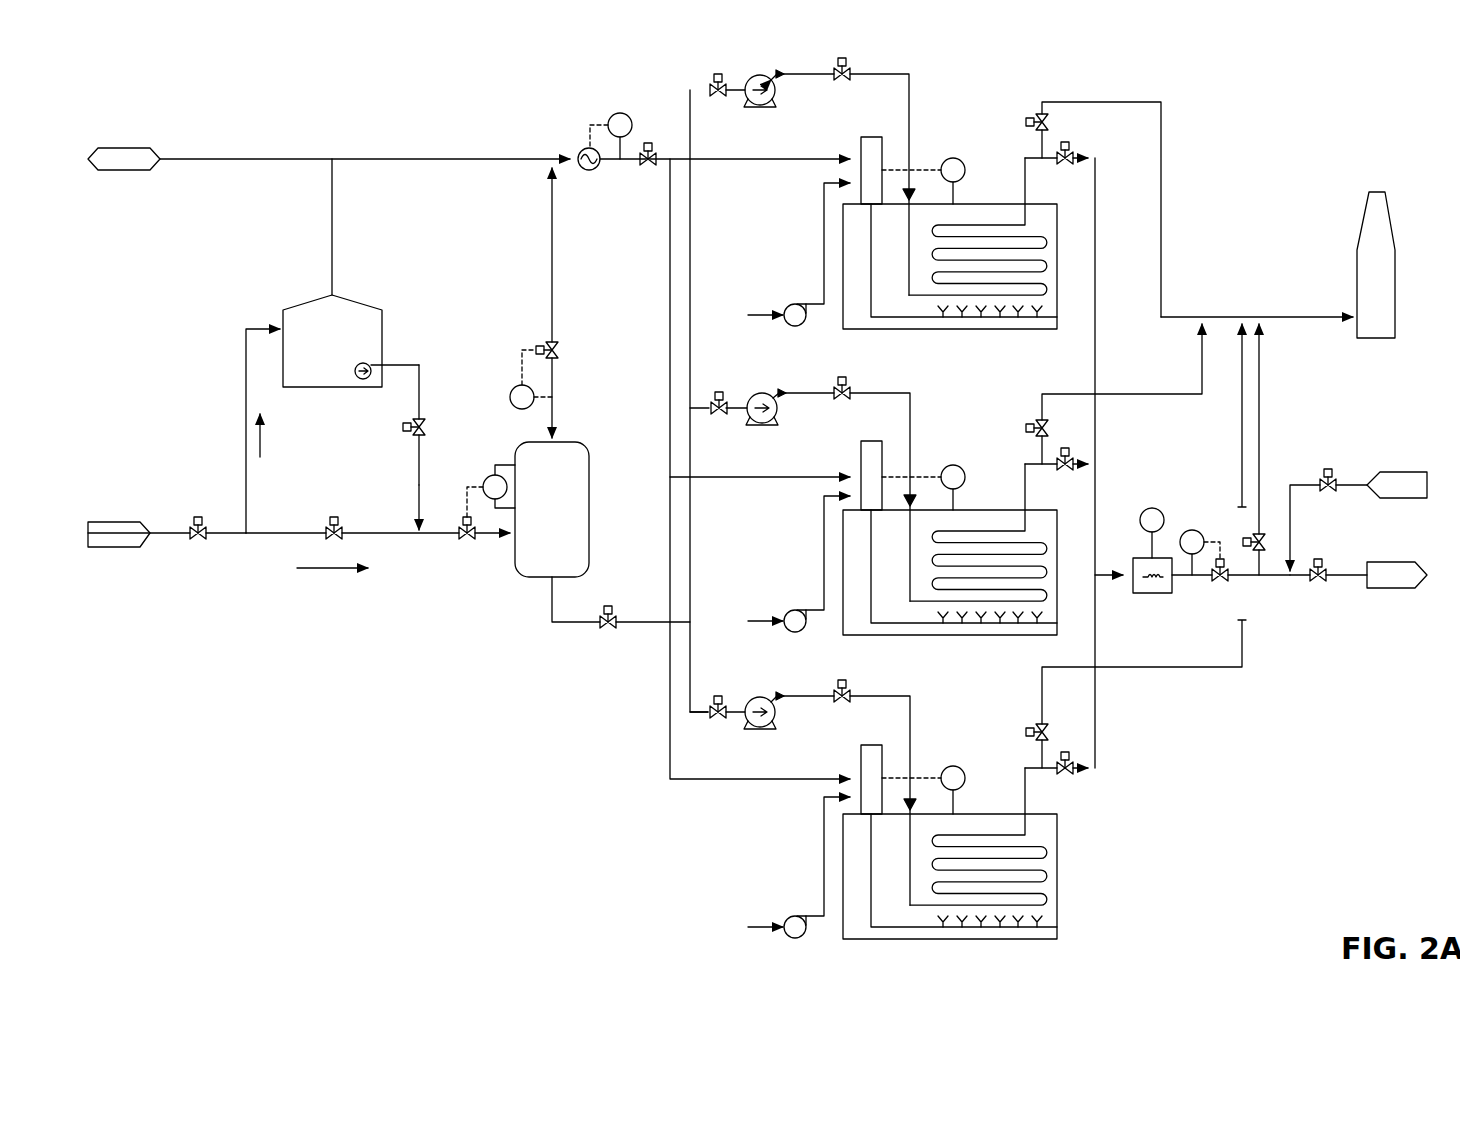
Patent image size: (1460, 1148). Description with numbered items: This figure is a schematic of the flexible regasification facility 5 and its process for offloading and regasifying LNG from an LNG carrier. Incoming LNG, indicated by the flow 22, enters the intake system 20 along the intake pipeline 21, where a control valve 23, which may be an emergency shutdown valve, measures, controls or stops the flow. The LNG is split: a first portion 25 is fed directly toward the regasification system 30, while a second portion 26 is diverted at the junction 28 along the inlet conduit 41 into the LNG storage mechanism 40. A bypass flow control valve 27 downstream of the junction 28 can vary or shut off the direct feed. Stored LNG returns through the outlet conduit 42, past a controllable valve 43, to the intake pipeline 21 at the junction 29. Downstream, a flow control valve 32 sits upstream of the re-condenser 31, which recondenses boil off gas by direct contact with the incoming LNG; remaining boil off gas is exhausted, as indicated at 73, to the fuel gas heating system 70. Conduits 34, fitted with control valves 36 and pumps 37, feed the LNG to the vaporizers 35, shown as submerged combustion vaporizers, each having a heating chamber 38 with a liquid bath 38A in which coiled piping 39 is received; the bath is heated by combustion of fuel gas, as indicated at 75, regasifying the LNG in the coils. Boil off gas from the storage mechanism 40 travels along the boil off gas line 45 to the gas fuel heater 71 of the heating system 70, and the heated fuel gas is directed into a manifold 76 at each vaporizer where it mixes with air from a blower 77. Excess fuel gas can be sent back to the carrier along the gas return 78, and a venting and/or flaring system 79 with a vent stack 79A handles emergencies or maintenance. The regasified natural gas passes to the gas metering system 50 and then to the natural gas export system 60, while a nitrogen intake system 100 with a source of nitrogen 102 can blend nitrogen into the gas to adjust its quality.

The regasification facility 5 is at (550, 840).
The intake system 20 is at (197, 572).
The intake pipeline 21 is at (226, 540).
The flow of incoming LNG 22 is at (113, 522).
The control valve 23 is at (199, 520).
The first portion of LNG flow 25 is at (330, 571).
The second portion of LNG flow 26 is at (262, 445).
The bypass flow control valve 27 is at (333, 525).
The junction 28 is at (250, 540).
The junction 29 is at (420, 540).
The regasification system 30 is at (566, 712).
The re-condenser 31 is at (590, 505).
The flow control valve 32 is at (475, 540).
The conduits 34 is at (655, 625).
The vaporizer 35 is at (986, 520).
The control valve 36 is at (598, 626).
The pump 37 is at (762, 72).
The heating chamber 38 is at (1060, 306).
The liquid bath 38A is at (1046, 222).
The coiled piping 39 is at (1046, 268).
The LNG storage mechanism 40 is at (355, 296).
The inlet conduit 41 is at (244, 405).
The outlet conduit 42 is at (402, 365).
The controllable valve 43 is at (421, 424).
The boil off gas line 45 is at (334, 220).
The gas metering system 50 is at (1163, 550).
The natural gas export system 60 is at (1393, 563).
The fuel gas heating system 70 is at (585, 123).
The gas fuel heater 71 is at (583, 148).
The boil off gas exhaust to heating system 73 is at (555, 280).
The combustion of fuel gas 75 is at (1040, 315).
The manifold 76 is at (860, 171).
The blower 77 is at (790, 306).
The gas return 78 is at (126, 147).
The venting and/or flaring system 79 is at (1292, 298).
The vent and/or flare stack 79A is at (1365, 200).
The nitrogen intake system 100 is at (1298, 460).
The source of nitrogen 102 is at (1400, 471).